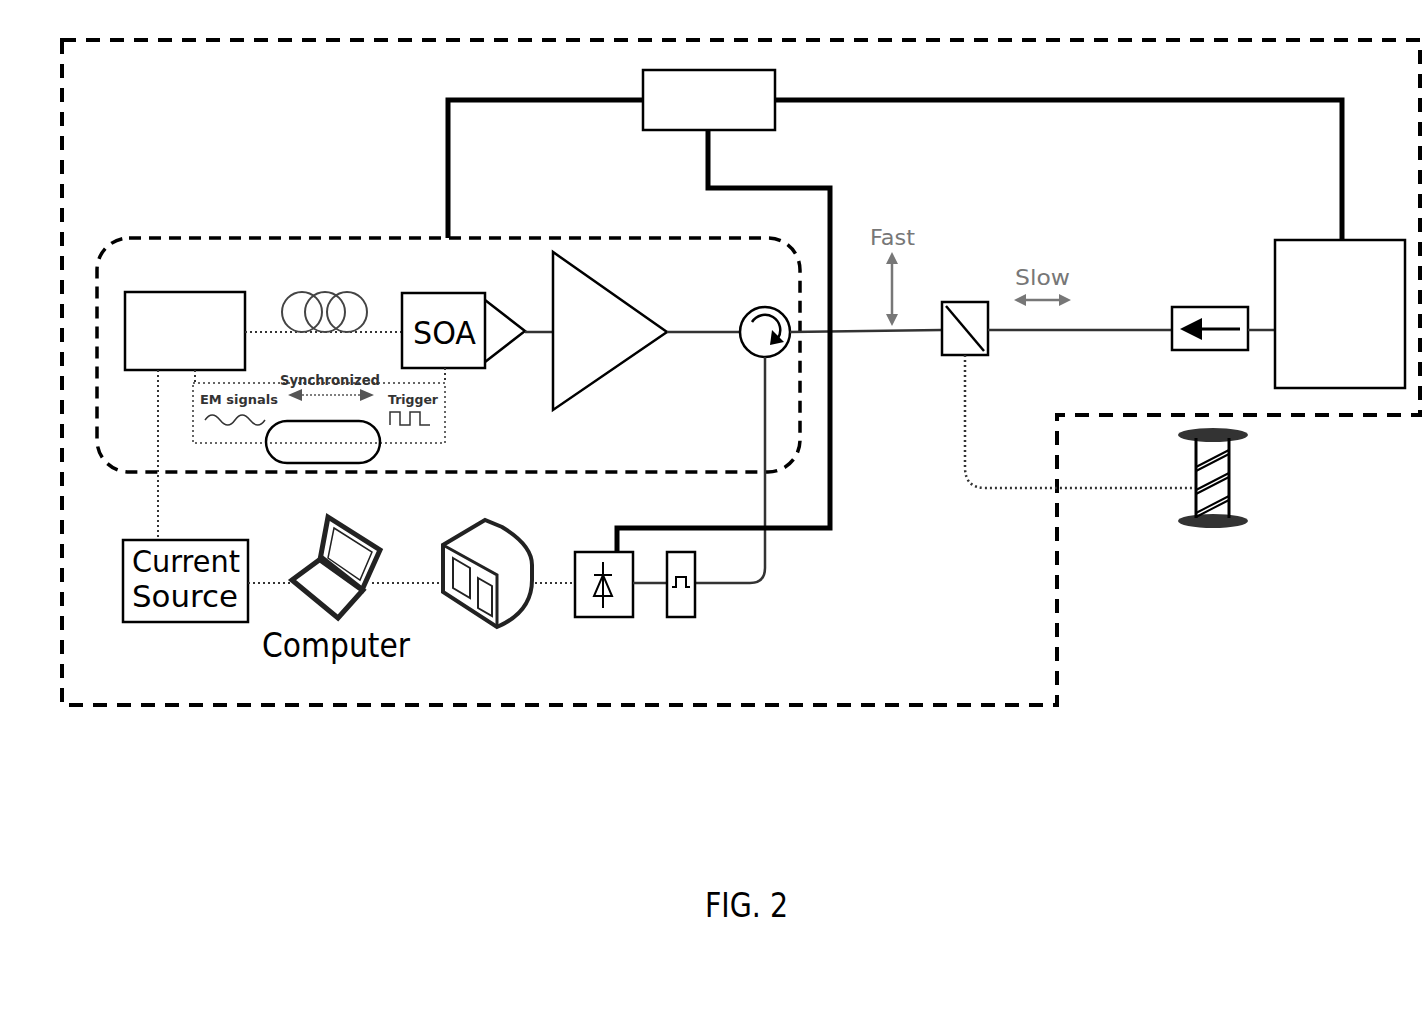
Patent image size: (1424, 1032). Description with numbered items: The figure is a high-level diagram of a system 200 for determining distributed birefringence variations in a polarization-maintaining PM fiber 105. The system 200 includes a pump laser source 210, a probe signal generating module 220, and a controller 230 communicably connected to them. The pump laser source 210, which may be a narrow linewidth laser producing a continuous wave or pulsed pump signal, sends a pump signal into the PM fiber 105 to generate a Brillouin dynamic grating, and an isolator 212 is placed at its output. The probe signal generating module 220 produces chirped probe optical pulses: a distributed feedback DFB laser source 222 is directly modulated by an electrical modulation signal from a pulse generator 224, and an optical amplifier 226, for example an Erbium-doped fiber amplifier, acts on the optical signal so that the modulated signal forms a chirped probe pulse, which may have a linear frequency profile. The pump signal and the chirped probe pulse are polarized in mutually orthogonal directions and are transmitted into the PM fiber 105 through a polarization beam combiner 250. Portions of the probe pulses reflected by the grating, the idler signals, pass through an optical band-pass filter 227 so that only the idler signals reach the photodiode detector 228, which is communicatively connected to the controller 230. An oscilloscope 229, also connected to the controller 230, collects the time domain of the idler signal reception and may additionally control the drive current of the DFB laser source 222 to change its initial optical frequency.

The system 200 is at (130, 94).
The probe signal generating module 220 is at (660, 238).
The distributed feedback (DFB) laser source 222 is at (222, 293).
The pulse generator 224 is at (345, 464).
The optical amplifier 226 is at (600, 380).
The optical band-pass filter (OBPF) 227 is at (675, 552).
The detector 228 is at (600, 552).
The oscilloscope 229 is at (478, 536).
The controller 230 is at (735, 119).
The pump laser source 210 is at (1305, 241).
The isolator 212 is at (1185, 352).
The polarization beam combiner (PBC) 250 is at (985, 357).
The PM fiber 105 is at (1230, 481).